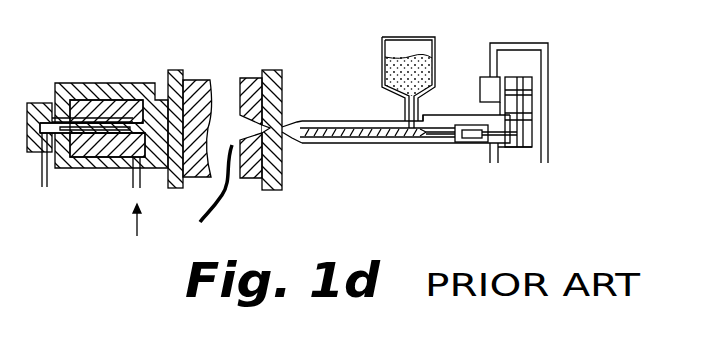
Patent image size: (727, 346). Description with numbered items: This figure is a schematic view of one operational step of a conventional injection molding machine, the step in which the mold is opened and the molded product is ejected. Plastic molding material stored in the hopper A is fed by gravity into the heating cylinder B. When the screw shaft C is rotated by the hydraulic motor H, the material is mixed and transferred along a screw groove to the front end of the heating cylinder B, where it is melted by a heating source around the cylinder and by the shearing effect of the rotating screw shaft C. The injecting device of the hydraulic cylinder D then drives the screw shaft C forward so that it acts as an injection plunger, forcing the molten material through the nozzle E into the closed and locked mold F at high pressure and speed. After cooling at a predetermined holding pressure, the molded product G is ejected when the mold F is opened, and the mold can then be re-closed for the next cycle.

The hopper A is at (380, 72).
The heating cylinder B is at (318, 146).
The screw shaft C is at (352, 137).
The hydraulic cylinder D is at (436, 146).
The nozzle E is at (282, 128).
The mold F is at (257, 76).
The molded product G is at (222, 200).
The hydraulic motor H is at (540, 121).